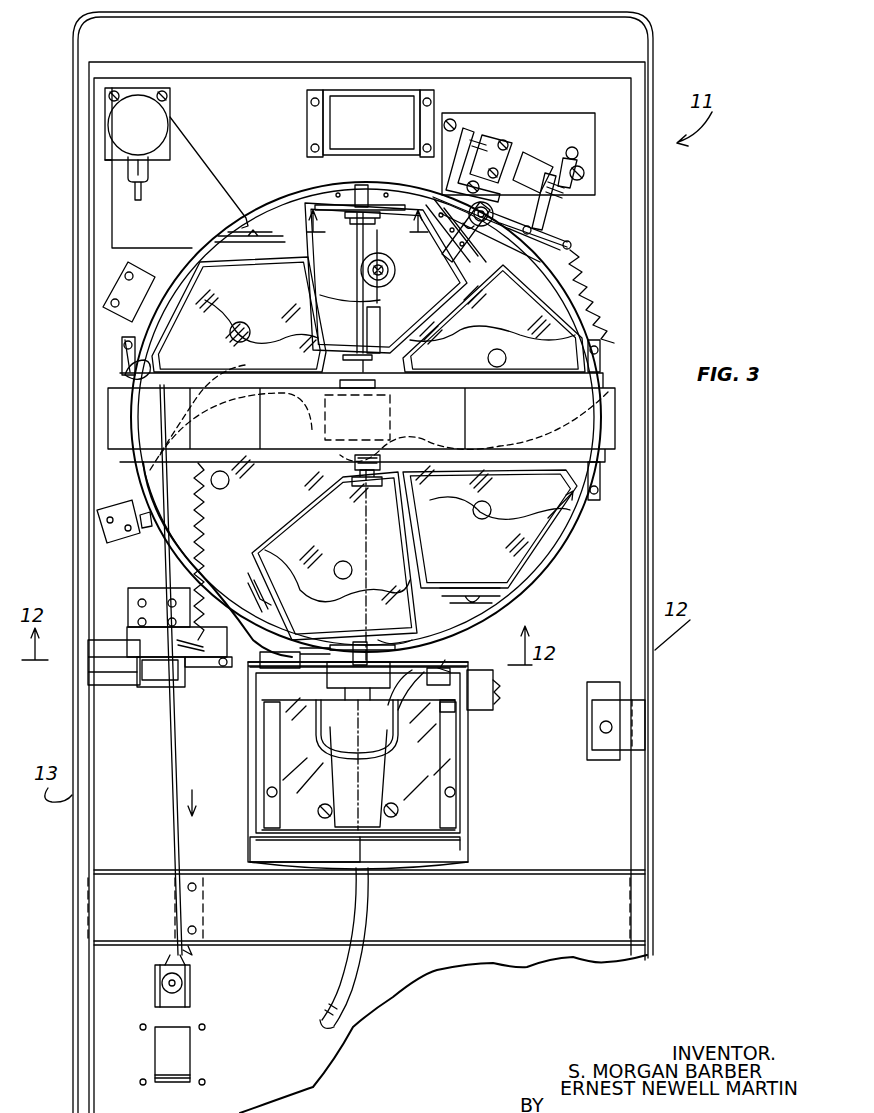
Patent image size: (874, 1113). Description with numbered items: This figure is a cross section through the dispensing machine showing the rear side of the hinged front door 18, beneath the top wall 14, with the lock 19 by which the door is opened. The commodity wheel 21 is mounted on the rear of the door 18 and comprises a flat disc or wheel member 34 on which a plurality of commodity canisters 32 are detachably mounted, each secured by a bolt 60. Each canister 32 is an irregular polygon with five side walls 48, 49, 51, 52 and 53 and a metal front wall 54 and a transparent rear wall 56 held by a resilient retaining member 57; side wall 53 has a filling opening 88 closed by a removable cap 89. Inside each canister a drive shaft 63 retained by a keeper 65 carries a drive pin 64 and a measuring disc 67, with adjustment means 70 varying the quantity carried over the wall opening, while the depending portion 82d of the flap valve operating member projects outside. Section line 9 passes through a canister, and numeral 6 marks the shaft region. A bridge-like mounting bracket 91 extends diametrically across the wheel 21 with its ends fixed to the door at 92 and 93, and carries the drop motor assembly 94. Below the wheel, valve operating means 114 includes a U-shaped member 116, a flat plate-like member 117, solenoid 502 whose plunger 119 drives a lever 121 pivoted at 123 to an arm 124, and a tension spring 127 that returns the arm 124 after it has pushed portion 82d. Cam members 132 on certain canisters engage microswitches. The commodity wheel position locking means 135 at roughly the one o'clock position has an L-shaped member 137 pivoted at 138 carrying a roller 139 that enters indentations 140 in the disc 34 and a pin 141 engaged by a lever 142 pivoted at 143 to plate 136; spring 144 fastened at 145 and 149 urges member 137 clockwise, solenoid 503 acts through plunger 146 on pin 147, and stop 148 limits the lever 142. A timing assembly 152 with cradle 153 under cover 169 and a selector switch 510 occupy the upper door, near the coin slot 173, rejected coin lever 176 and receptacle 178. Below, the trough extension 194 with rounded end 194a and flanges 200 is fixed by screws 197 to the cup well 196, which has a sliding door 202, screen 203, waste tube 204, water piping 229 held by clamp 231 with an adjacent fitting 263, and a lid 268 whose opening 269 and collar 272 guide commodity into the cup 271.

The top wall 14 is at (496, 20).
The hinged front door 18 is at (515, 787).
The lock 19 is at (604, 727).
The commodity wheel 21 is at (268, 198).
The flat disc or wheel member 34 is at (298, 203).
The commodity canister 32 is at (270, 266).
The shaft 6 is at (398, 242).
The section line 9 is at (372, 229).
The side wall 48 is at (318, 337).
The side wall 49 is at (340, 356).
The side wall 51 is at (318, 308).
The side wall 52 is at (128, 266).
The side wall 53 is at (530, 128).
The front wall 54 is at (308, 288).
The rear wall 56 is at (190, 260).
The resilient retaining member 57 is at (212, 290).
The bolt 60 is at (250, 340).
The drive shaft 63 is at (386, 330).
The drive pin 64 is at (352, 386).
The keeper 65 is at (366, 340).
The measuring disc 67 is at (418, 226).
The adjustment means 70 is at (359, 234).
The opening 88 is at (428, 265).
The removable cap 89 is at (234, 228).
The bridge-like member or mounting bracket 91 is at (520, 430).
The end fixing point 92 is at (126, 372).
The end fixing point 93 is at (602, 350).
The drop motor assembly 94 is at (388, 424).
The valve operating means 114 is at (167, 710).
The U-shaped member 116 is at (128, 637).
The flat plate-like member 117 is at (258, 664).
The plunger 119 is at (208, 668).
The lever 121 is at (310, 672).
The pivotal connection 123 is at (361, 666).
The arm 124 is at (400, 638).
The tension spring 127 is at (226, 715).
The cam member 132 is at (135, 548).
The commodity wheel position locking means 135 is at (573, 128).
The plate 136 is at (481, 118).
The L-shaped member 137 is at (578, 238).
The pivot 138 is at (443, 198).
The roller 139 is at (498, 222).
The indentation 140 is at (245, 212).
The pin 141 is at (532, 254).
The lever 142 is at (566, 232).
The pivotal connection 143 is at (576, 150).
The spring 144 is at (600, 300).
The spring fastening point 145 is at (574, 248).
The plunger 146 is at (570, 186).
The pin 147 is at (493, 159).
The stop 148 is at (584, 170).
The spring fastening point 149 is at (616, 332).
The timing assembly 152 is at (298, 108).
The cradle 153 is at (307, 143).
The cover 169 is at (385, 121).
The coin slot 173 is at (140, 171).
The rejected coin lever 176 is at (152, 362).
The receptacle 178 is at (180, 1052).
The horizontal trough extension 194 is at (345, 735).
The rounded end portion 194a is at (340, 720).
The cup well 196 is at (484, 782).
The screw 197 is at (312, 692).
The flange 200 is at (326, 740).
The sliding door 202 is at (430, 828).
The screen 203 is at (252, 856).
The tube 204 is at (358, 985).
The piping 229 is at (486, 676).
The clamp 231 is at (460, 712).
The connector 263 is at (498, 698).
The lid 268 is at (352, 640).
The opening 269 is at (340, 652).
The cup 271 is at (386, 806).
The collar 272 is at (356, 712).
The solenoid SO2 502 is at (112, 672).
The solenoid SO3 503 is at (550, 152).
The selector switch S10 510 is at (158, 128).
The depending portion 82d is at (372, 650).